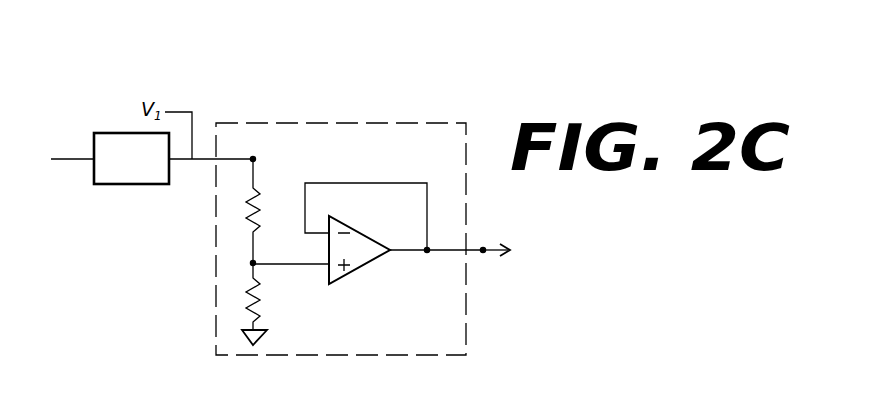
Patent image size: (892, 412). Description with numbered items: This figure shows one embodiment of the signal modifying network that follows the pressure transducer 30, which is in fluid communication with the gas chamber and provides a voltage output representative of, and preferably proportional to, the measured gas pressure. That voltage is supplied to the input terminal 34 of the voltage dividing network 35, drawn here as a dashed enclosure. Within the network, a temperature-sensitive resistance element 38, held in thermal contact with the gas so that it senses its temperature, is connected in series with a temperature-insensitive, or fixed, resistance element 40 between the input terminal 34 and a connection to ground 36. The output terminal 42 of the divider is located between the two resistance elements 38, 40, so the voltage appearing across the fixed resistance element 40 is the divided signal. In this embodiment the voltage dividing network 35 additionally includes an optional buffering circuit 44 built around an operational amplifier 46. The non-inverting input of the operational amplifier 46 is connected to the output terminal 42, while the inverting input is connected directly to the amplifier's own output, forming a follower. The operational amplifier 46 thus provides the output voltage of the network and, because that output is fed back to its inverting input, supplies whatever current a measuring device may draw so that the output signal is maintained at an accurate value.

The pressure transducer 30 is at (120, 185).
The input terminal 34 is at (255, 158).
The temperature-sensitive resistance element 38 is at (248, 213).
The temperature-insensitive resistance element 40 is at (248, 300).
The ground 36 is at (270, 332).
The operational amplifier 46 is at (365, 270).
The buffering circuit 44 is at (392, 170).
The output terminal 42 is at (483, 252).
The voltage dividing network 35 is at (466, 328).